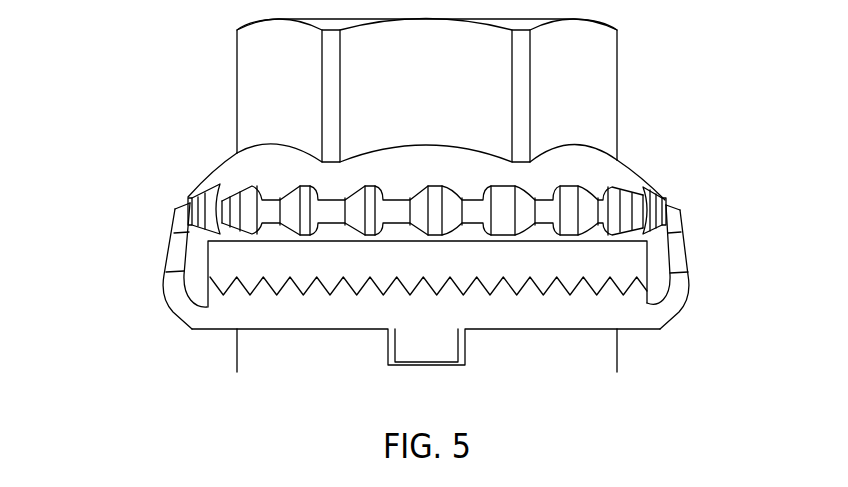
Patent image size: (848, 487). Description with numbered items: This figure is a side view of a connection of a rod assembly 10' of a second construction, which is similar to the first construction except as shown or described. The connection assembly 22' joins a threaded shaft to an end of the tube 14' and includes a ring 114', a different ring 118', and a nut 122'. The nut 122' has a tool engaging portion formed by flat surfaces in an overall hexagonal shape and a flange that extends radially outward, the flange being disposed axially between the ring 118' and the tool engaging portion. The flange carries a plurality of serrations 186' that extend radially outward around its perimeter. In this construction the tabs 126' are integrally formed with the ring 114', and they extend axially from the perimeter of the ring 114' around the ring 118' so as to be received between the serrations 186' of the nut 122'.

The rod assembly 10' is at (415, 202).
The connection assembly 22' is at (436, 127).
The nut 122' is at (488, 91).
The serrations 186' is at (485, 181).
The tabs 126' is at (480, 262).
The ring 118' is at (495, 274).
The ring 114' is at (479, 336).
The tube 14' is at (492, 356).